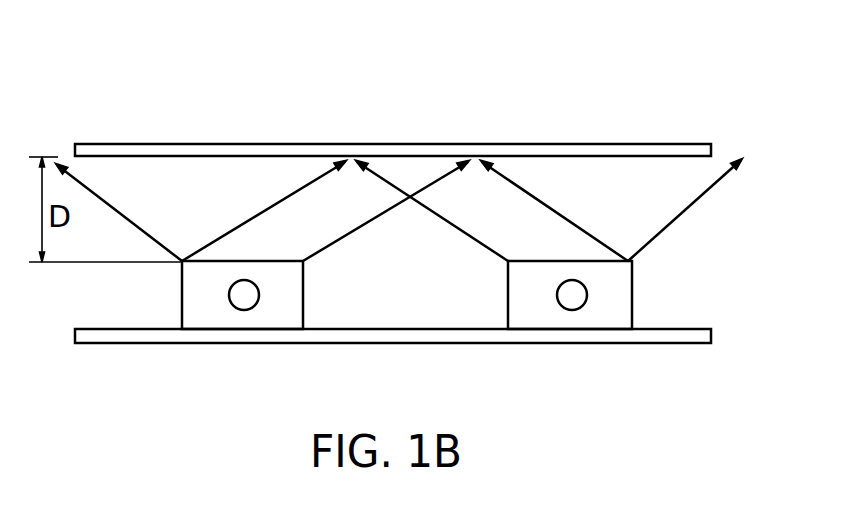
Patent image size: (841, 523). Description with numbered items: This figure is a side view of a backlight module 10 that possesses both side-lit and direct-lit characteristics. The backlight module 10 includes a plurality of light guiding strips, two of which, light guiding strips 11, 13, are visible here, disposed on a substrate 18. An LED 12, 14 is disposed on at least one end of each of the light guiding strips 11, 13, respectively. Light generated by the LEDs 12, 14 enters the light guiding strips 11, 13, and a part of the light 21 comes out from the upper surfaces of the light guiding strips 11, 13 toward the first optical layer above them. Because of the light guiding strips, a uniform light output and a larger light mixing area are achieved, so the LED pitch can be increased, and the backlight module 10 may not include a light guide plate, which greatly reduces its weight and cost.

The backlight module 10 is at (523, 98).
The light guiding strip 11 is at (305, 277).
The LED 12 is at (259, 295).
The light guiding strip 13 is at (633, 277).
The LED 14 is at (587, 295).
The substrate 18 is at (362, 343).
The light 21 is at (240, 226).